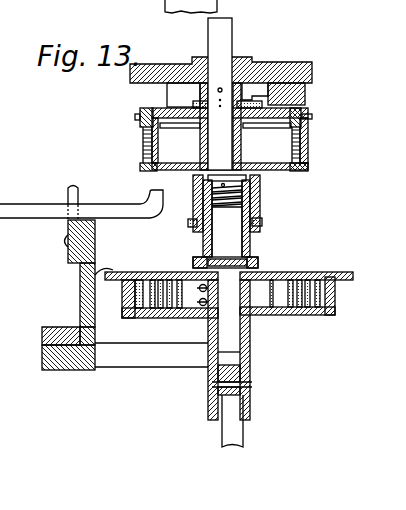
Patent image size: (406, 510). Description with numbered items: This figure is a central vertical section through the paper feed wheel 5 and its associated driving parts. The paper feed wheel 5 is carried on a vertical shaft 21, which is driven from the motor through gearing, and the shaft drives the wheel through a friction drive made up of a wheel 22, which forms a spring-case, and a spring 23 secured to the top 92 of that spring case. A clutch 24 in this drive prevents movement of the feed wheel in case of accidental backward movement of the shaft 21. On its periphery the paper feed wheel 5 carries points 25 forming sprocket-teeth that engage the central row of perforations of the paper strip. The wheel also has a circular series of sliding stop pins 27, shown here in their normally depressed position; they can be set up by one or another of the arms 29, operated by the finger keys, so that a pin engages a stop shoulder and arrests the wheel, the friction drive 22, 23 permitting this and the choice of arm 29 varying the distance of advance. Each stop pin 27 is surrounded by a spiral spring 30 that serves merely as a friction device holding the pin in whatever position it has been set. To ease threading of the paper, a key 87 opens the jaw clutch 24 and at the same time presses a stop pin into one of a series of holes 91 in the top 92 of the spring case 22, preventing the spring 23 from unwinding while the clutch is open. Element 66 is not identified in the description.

The plate 66 is at (180, 90).
The paper feed wheel 5 is at (280, 75).
The points 25 is at (132, 120).
The spiral spring 30 is at (305, 142).
The sliding stop pins 27 is at (302, 173).
The key 87 is at (262, 222).
The clutch 24 is at (257, 263).
The top of spring case 92 is at (167, 267).
The spring 23 is at (300, 270).
The wheel 22 is at (337, 295).
The vertical shaft 21 is at (230, 417).
The arms 29 is at (148, 215).
The holes 91 is at (82, 275).